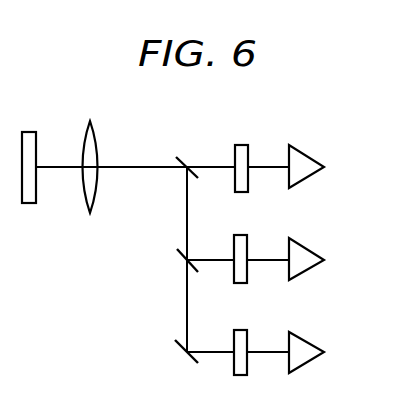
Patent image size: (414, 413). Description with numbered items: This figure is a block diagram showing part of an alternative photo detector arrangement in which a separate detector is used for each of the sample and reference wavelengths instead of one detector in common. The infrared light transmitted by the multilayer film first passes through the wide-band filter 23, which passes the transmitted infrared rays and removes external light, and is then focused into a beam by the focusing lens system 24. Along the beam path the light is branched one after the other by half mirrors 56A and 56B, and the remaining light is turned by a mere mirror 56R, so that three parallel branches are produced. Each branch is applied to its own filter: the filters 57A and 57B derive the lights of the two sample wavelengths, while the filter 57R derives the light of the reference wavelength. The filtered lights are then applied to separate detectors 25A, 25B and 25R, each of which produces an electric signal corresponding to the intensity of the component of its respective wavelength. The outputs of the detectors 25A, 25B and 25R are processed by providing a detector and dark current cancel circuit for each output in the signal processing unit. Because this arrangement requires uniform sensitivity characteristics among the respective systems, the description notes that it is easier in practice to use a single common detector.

The wide-band infrared interference filter 23 is at (32, 133).
The lens system 24 is at (93, 134).
The half mirror 56A is at (181, 158).
The half mirror 56B is at (178, 252).
The mirror 56R is at (186, 363).
The filter 57A is at (240, 146).
The filter 57B is at (240, 237).
The filter 57R is at (240, 332).
The detector 25A is at (306, 156).
The detector 25B is at (308, 253).
The detector 25R is at (308, 345).